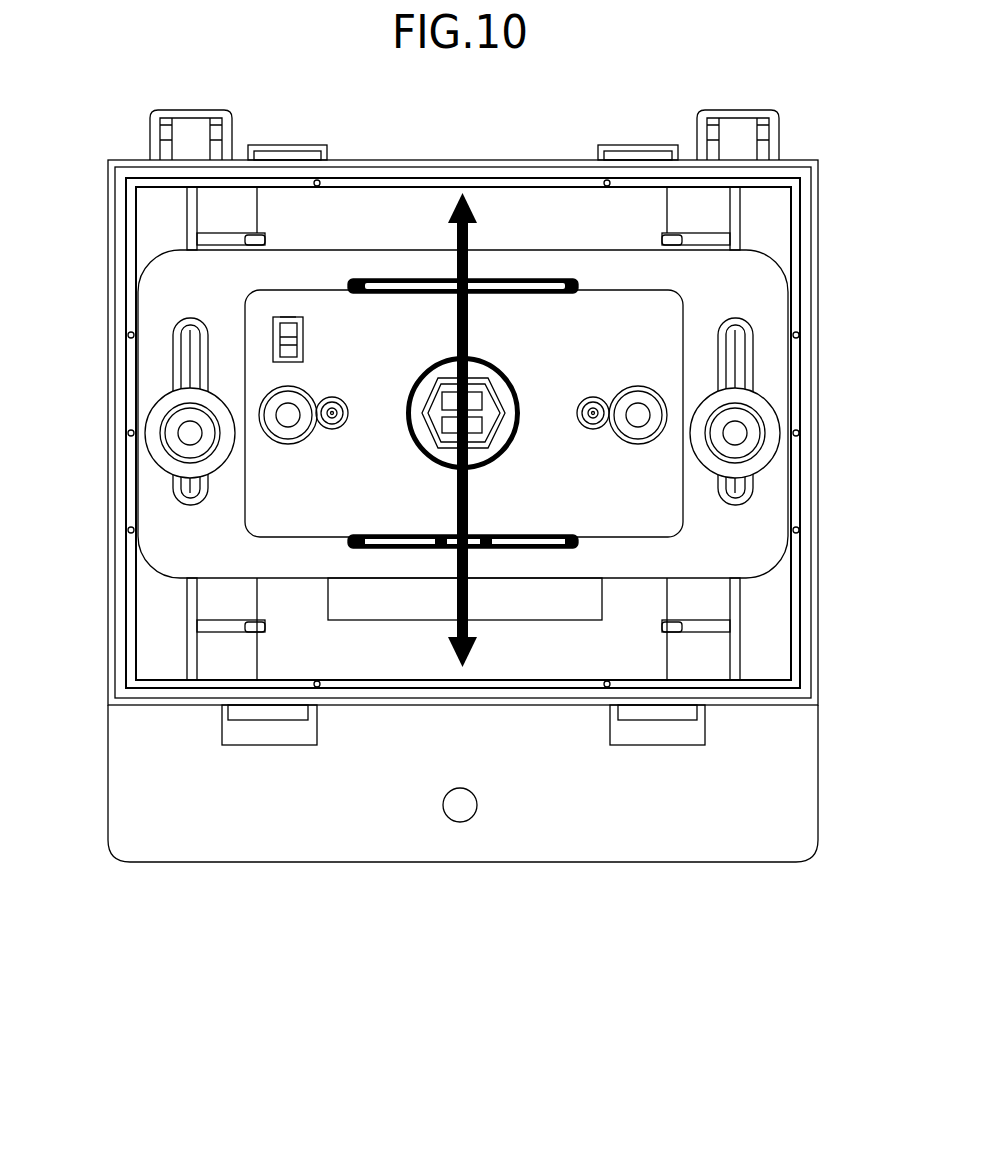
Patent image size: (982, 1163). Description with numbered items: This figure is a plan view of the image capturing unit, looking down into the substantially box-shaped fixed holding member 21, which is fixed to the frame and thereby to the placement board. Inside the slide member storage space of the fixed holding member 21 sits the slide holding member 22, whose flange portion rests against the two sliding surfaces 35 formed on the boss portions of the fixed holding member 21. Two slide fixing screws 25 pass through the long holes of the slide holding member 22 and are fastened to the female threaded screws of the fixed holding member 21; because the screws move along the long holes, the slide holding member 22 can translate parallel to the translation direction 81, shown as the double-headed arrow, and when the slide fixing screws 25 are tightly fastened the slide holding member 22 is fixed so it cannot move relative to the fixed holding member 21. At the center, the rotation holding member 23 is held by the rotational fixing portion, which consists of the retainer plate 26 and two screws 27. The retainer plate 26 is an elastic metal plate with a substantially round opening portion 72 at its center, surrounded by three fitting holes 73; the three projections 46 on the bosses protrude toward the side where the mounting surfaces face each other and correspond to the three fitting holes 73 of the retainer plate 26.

The fixed holding member 21 is at (486, 158).
The slide holding member 22 is at (518, 248).
The rotation holding member 23 is at (507, 443).
The slide fixing screws 25 is at (153, 447).
The retainer plate 26 is at (328, 290).
The screws 27 is at (287, 447).
The sliding surfaces 35 is at (188, 352).
The projections 46 is at (272, 340).
The opening portion 72 is at (421, 455).
The fitting holes 73 is at (285, 316).
The translation direction 81 is at (470, 600).